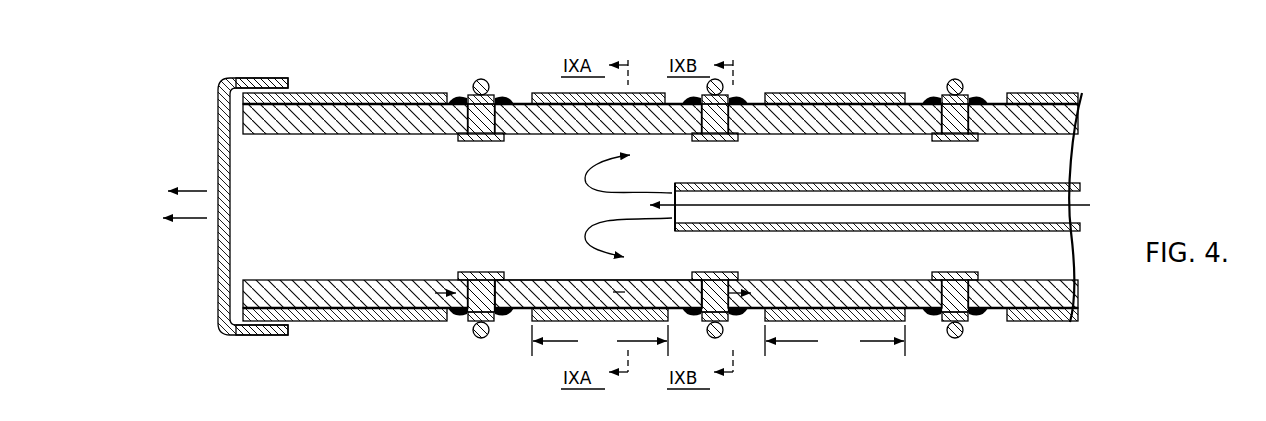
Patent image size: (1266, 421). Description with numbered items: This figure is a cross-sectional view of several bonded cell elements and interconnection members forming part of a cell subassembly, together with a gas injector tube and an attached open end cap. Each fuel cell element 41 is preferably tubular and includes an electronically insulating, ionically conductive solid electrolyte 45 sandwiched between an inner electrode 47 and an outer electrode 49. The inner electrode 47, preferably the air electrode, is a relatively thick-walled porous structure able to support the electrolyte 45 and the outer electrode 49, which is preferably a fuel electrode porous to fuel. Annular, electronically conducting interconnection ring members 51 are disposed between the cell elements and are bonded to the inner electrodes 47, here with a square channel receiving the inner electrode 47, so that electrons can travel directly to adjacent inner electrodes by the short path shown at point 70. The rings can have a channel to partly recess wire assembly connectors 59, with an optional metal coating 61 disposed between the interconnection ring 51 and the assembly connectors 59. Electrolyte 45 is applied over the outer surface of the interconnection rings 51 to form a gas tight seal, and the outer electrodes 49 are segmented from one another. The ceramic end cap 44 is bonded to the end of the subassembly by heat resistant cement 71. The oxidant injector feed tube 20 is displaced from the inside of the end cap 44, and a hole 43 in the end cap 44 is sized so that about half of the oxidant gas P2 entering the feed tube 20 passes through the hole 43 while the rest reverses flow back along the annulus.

The oxidant injector feed tube 20 is at (825, 231).
The fuel cell element 41 is at (718, 340).
The hole 43 is at (218, 190).
The end cap 44 is at (262, 86).
The solid electrolyte 45 is at (828, 101).
The inner electrode 47 is at (869, 125).
The outer electrode 49 is at (868, 98).
The interconnection ring member 51 is at (491, 128).
The assembly connector 59 is at (964, 88).
The metal coating 61 is at (470, 98).
The point 70 is at (595, 287).
The heat resistant cement 71 is at (288, 324).
The oxidant gas P2 is at (890, 198).